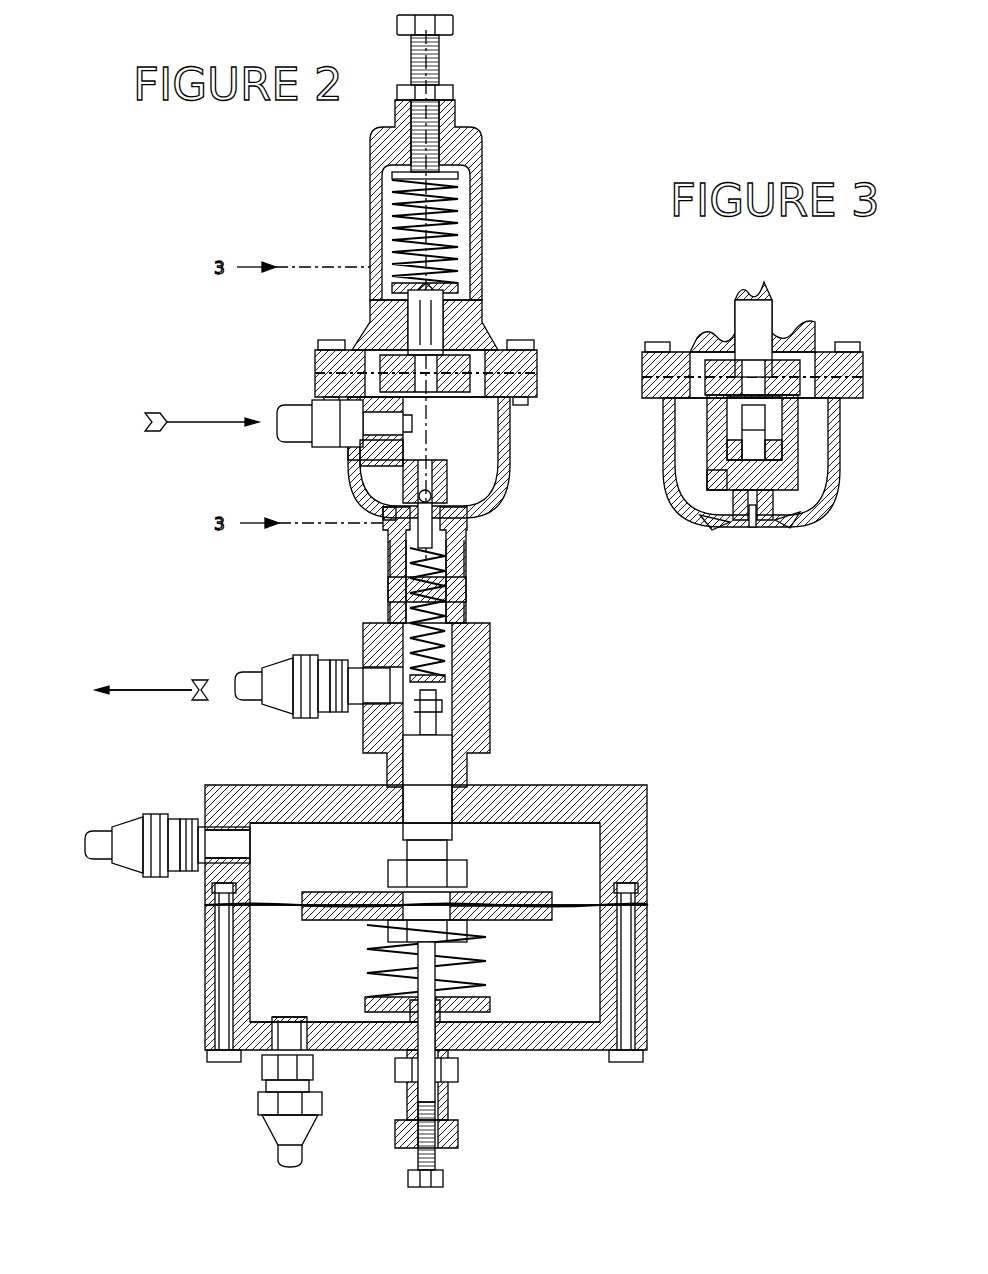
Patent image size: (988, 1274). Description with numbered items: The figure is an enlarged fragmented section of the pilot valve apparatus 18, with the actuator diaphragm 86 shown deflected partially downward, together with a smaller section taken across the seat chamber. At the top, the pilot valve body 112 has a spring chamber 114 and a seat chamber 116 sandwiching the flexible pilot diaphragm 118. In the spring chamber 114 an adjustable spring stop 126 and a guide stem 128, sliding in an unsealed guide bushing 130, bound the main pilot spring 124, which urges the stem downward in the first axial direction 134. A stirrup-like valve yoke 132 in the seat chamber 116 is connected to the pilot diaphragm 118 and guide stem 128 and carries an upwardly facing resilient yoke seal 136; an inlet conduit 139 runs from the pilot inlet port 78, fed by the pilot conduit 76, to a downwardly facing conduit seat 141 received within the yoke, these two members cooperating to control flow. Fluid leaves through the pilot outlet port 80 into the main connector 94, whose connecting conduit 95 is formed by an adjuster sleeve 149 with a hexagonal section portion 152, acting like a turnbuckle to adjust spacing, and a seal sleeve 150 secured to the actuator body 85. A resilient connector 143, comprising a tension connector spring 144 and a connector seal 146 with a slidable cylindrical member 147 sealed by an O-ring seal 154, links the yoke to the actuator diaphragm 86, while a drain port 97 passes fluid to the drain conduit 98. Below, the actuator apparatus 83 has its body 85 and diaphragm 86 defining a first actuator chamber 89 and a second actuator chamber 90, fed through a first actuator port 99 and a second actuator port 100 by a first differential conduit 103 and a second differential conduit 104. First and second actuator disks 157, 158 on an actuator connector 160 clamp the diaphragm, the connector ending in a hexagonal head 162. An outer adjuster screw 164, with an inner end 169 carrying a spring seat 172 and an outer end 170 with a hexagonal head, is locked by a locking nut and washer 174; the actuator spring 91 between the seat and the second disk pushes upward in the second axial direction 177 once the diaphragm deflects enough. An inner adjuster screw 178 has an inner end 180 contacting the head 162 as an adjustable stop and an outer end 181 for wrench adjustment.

In FIG. 3, the pilot valve apparatus 18 is at (599, 286).
In FIG. 2, the pilot conduit 76 is at (290, 443).
In FIG. 2, the pilot inlet port 78 is at (327, 413).
In FIG. 2, the pilot outlet port 80 is at (440, 540).
In FIG. 2, the actuator apparatus 83 is at (612, 770).
In FIG. 2, the actuator body 85 is at (648, 815).
In FIG. 2, the actuator diaphragm 86 is at (602, 902).
In FIG. 2, the first actuator chamber 89 is at (425, 841).
In FIG. 2, the second actuator chamber 90 is at (425, 998).
In FIG. 2, the actuator spring 91 is at (487, 977).
In FIG. 2, the main connector 94 is at (538, 581).
In FIG. 2, the connecting conduit 95 is at (528, 581).
In FIG. 2, the drain port 97 is at (358, 712).
In FIG. 2, the drain conduit 98 is at (235, 672).
In FIG. 2, the first actuator port 99 is at (262, 835).
In FIG. 2, the second actuator port 100 is at (286, 1017).
In FIG. 2, the first differential conduit 103 is at (100, 820).
In FIG. 2, the second differential conduit 104 is at (272, 1148).
In FIG. 2, the pilot valve body 112 is at (512, 183).
In FIG. 2, the spring chamber 114 is at (484, 262).
In FIG. 2, the seat chamber 116 is at (500, 488).
In FIG. 2, the pilot diaphragm 118 is at (483, 392).
In FIG. 3, the pilot diaphragm 118 is at (810, 373).
In FIG. 2, the main pilot spring 124 is at (388, 236).
In FIG. 2, the adjustable spring stop 126 is at (438, 155).
In FIG. 2, the guide stem 128 is at (433, 325).
In FIG. 3, the guide stem 128 is at (755, 320).
In FIG. 2, the guide bushing 130 is at (370, 332).
In FIG. 2, the valve yoke 132 is at (449, 466).
In FIG. 3, the valve yoke 132 is at (797, 415).
In FIG. 3, the first axial direction 134 is at (610, 328).
In FIG. 2, the yoke seal 136 is at (478, 507).
In FIG. 3, the yoke seal 136 is at (810, 507).
In FIG. 2, the inlet conduit 139 is at (372, 463).
In FIG. 3, the inlet conduit 139 is at (735, 443).
In FIG. 2, the conduit seat 141 is at (387, 520).
In FIG. 3, the conduit seat 141 is at (718, 482).
In FIG. 2, the resilient connector 143 is at (445, 687).
In FIG. 2, the connector spring 144 is at (412, 600).
In FIG. 3, the connector spring 144 is at (757, 527).
In FIG. 2, the connector seal 146 is at (501, 717).
In FIG. 2, the cylindrical member 147 is at (448, 733).
In FIG. 2, the adjuster sleeve 149 is at (460, 610).
In FIG. 2, the seal sleeve 150 is at (490, 633).
In FIG. 2, the hexagonal section portion 152 is at (392, 585).
In FIG. 2, the O-ring seal 154 is at (467, 762).
In FIG. 2, the first actuator disk 157 is at (365, 892).
In FIG. 2, the second actuator disk 158 is at (337, 922).
In FIG. 2, the actuator connector 160 is at (403, 858).
In FIG. 2, the hexagonal head 162 is at (465, 928).
In FIG. 2, the outer adjuster screw 164 is at (446, 1103).
In FIG. 2, the inner end 169 is at (530, 1052).
In FIG. 2, the outer end 170 is at (460, 1146).
In FIG. 2, the spring seat 172 is at (562, 1051).
In FIG. 2, the locking nut and washer 174 is at (460, 1066).
In FIG. 2, the second axial direction 177 is at (699, 940).
In FIG. 2, the inner adjuster screw 178 is at (412, 1093).
In FIG. 2, the inner end 180 is at (386, 1052).
In FIG. 2, the outer end 181 is at (430, 1188).